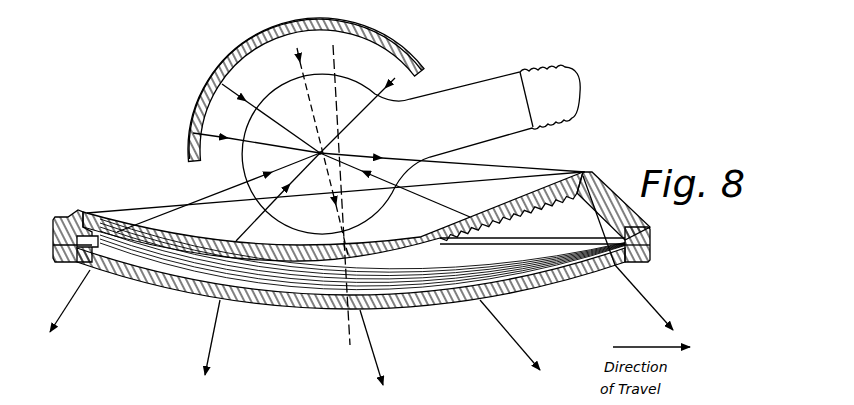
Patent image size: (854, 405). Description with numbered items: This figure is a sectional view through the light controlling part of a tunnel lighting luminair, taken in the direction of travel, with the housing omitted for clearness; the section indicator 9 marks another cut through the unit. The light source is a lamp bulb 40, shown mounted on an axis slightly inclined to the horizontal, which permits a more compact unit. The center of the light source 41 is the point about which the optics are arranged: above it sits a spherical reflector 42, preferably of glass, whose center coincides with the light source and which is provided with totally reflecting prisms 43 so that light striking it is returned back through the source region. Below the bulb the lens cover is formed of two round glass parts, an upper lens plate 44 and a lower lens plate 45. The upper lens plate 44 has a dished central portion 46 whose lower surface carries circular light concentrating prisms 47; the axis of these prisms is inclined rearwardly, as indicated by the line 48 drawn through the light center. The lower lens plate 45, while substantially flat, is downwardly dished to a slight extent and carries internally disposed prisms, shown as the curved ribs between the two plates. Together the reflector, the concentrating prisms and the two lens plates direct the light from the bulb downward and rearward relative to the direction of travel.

The section line 9- 9 is at (343, 20).
The lamp bulb 40 is at (488, 82).
The center of the light source 41 is at (347, 147).
The spherical reflector 42 is at (389, 42).
The totally reflecting prisms 43 is at (412, 58).
The upper lens plate 44 is at (650, 230).
The lower lens plate 45 is at (650, 259).
The dished central portion 46 is at (482, 212).
The circular light concentrating prisms 47 is at (588, 182).
The line indicating axis of prisms 48 is at (333, 60).